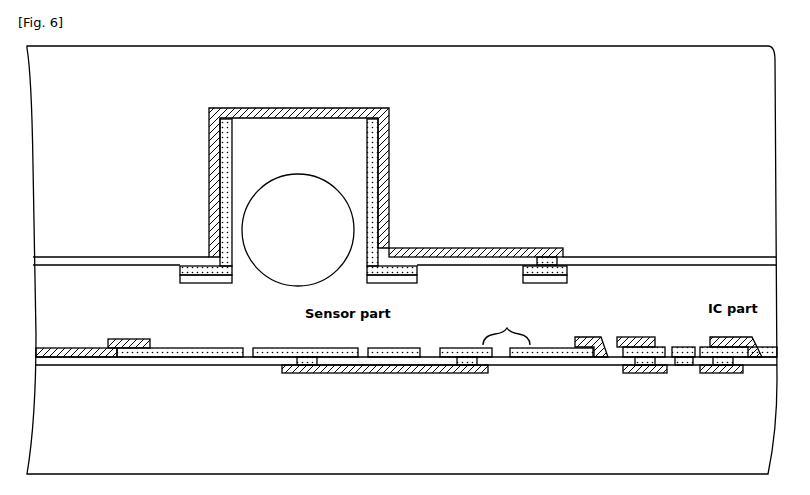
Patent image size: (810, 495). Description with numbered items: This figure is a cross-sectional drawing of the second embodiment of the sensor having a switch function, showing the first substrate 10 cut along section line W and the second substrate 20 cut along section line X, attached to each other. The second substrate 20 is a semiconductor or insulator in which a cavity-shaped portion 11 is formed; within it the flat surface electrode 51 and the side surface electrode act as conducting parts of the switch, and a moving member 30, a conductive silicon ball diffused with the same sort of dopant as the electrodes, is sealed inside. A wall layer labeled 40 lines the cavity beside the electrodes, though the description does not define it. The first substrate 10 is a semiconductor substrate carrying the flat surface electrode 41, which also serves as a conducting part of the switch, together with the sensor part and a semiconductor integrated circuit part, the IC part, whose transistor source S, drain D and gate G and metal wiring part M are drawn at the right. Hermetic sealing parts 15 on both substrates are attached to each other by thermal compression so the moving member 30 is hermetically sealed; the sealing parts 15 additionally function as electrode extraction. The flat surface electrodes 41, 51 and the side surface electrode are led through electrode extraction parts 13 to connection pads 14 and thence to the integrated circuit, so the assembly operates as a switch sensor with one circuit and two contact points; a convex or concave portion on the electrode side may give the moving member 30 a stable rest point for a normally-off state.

The first substrate 10 is at (694, 446).
The cavity-shaped portion 11 is at (340, 138).
The electrode extraction part 13 is at (483, 250).
The connection pad 14 is at (543, 278).
The hermetic sealing part 15 is at (215, 284).
The second substrate 20 is at (630, 128).
The moving member 30 is at (298, 230).
The side wall electrode 40 is at (378, 153).
The flat surface electrode 41 is at (283, 348).
The flat surface electrode 51 is at (309, 117).
The metal wiring part M is at (65, 348).
The gate G is at (685, 347).
The drain D is at (645, 367).
The source S is at (723, 367).
The section line and cutting surface X is at (419, 203).
The section line and cutting surface W is at (301, 407).